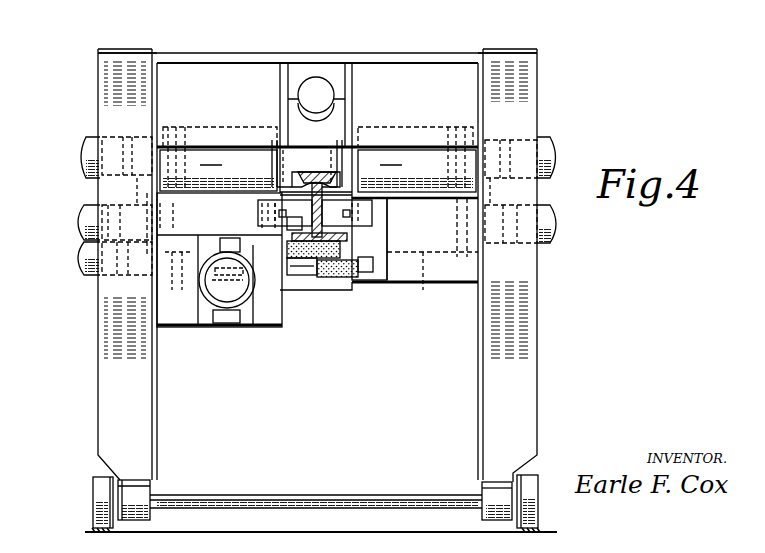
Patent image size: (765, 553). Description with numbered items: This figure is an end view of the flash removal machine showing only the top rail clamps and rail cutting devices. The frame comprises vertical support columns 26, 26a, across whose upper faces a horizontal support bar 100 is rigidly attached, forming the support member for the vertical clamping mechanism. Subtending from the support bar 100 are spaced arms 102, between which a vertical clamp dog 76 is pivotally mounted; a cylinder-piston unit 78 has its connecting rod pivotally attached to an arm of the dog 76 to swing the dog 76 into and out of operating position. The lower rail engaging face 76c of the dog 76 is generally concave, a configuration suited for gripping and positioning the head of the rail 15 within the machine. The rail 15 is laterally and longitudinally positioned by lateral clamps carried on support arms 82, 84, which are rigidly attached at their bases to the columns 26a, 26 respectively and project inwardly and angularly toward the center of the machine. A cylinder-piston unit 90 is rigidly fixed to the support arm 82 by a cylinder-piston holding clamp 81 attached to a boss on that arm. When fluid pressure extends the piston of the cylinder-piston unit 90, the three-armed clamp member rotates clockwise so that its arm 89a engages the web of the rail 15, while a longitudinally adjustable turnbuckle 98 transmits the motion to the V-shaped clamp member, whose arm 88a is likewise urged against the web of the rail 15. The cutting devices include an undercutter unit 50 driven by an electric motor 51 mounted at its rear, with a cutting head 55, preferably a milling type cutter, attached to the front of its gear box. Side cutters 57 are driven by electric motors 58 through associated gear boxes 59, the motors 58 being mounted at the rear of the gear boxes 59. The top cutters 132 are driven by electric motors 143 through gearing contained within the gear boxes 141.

The horizontal support bar 100 is at (233, 53).
The cylinder-piston unit 78 is at (310, 80).
The spaced arms 102 is at (281, 82).
The vertical clamp dog 76 is at (338, 90).
The lower rail engaging face 76c is at (307, 163).
The gear box 141 is at (235, 126).
The top cutter 132 is at (201, 125).
The electric motor 143 is at (86, 143).
The electric motor 58 is at (72, 215).
The electric motor 51 is at (73, 262).
The side cutter 57 is at (138, 205).
The vertical support column 26 is at (98, 325).
The vertical support column 26a is at (537, 352).
The rail 15 is at (322, 200).
The support arm 82 is at (213, 233).
The cylinder-piston holding clamp 81 is at (227, 312).
The cylinder-piston unit 90 is at (240, 297).
The undercutter unit 50 is at (188, 290).
The arm of clamp member 89a is at (278, 228).
The arm of clamp member 88a is at (365, 228).
The turnbuckle 98 is at (302, 268).
The cutting head 55 is at (330, 277).
The support arm 84 is at (385, 285).
The gear box 59 is at (435, 279).